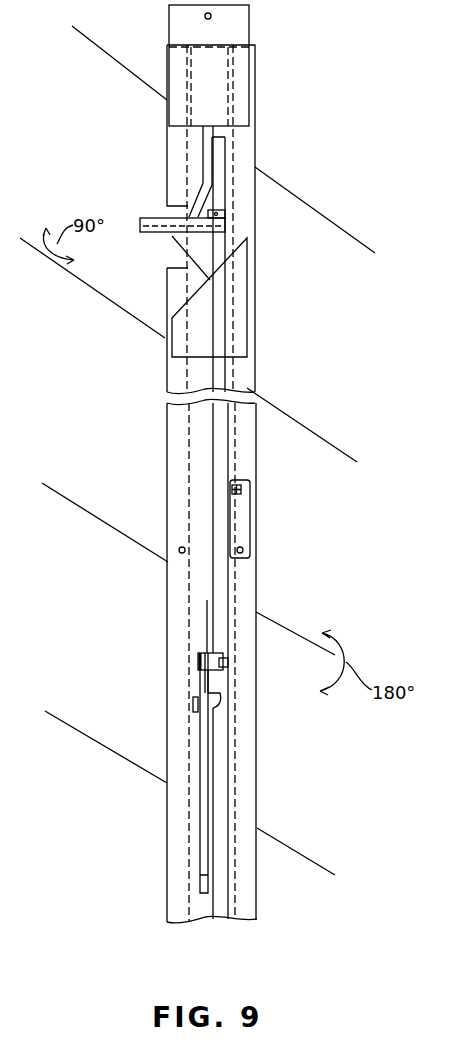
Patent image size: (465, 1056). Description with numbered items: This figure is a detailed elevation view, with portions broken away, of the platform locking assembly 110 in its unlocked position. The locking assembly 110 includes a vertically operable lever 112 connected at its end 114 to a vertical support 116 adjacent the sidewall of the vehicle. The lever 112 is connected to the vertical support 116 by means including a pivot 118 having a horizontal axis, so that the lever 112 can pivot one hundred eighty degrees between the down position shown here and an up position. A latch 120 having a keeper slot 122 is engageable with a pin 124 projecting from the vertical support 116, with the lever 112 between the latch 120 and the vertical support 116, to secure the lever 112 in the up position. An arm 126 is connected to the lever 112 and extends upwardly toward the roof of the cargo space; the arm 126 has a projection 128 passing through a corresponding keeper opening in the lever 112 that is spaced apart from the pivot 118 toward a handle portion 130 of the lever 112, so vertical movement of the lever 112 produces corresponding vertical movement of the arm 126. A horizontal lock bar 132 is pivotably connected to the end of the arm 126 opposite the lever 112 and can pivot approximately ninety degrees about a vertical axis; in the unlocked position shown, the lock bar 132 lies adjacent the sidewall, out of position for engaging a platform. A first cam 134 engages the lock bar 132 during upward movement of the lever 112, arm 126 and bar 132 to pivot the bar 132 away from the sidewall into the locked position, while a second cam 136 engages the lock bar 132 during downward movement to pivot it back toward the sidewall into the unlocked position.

The locking assembly 110 is at (120, 497).
The lever 112 is at (210, 800).
The end 114 is at (200, 653).
The vertical support 116 is at (245, 638).
The pivot 118 is at (224, 665).
The latch 120 is at (245, 526).
The keeper slot 122 is at (242, 488).
The pin 124 is at (178, 552).
The arm 126 is at (220, 603).
The projection 128 is at (193, 703).
The handle portion 130 is at (202, 857).
The horizontal lock bar 132 is at (147, 234).
The first cam 134 is at (202, 188).
The second cam 136 is at (203, 287).